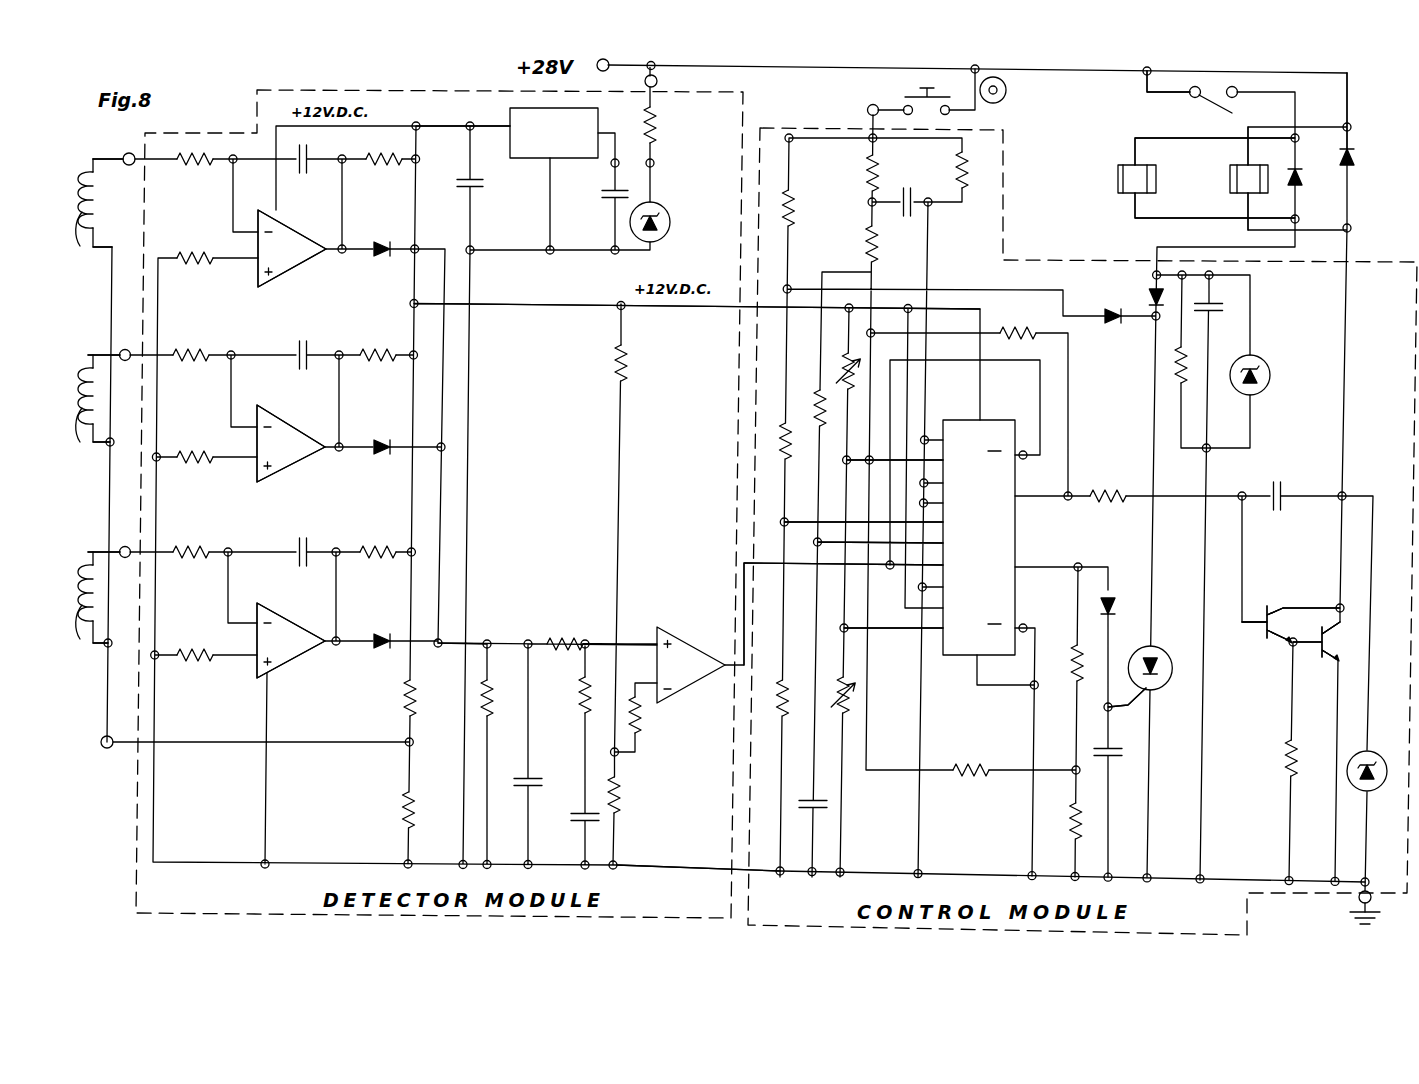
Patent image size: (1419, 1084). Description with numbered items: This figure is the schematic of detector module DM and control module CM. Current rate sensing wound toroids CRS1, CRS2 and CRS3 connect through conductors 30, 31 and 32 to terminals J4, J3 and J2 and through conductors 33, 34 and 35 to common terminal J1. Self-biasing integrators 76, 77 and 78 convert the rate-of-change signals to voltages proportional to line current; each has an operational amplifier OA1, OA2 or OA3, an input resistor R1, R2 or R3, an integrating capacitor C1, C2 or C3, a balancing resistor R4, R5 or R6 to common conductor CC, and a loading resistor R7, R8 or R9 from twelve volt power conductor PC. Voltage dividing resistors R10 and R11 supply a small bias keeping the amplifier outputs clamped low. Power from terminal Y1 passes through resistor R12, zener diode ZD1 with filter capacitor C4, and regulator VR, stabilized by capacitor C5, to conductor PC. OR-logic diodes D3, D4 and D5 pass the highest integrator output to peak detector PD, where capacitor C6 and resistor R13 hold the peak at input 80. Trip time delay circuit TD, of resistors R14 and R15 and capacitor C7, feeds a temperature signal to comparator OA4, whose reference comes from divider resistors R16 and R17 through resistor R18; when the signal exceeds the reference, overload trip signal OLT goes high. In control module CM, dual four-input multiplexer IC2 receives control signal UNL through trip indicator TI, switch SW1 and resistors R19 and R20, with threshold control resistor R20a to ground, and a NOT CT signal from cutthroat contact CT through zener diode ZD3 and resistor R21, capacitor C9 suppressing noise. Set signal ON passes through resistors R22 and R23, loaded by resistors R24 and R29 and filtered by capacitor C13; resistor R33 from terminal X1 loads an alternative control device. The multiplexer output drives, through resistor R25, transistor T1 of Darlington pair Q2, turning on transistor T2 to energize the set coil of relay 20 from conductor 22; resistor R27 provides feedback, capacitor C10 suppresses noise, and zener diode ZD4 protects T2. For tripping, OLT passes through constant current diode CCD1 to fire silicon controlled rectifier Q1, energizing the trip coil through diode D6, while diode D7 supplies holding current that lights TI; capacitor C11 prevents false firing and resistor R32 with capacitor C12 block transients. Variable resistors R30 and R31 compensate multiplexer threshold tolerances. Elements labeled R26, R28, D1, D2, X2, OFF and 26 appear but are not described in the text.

The detector module DM is at (410, 86).
The control module CM is at (1004, 184).
The conductor 30 is at (94, 145).
The conductor 31 is at (93, 342).
The conductor 32 is at (91, 538).
The conductor 33 is at (100, 248).
The conductor 34 is at (102, 444).
The conductor 35 is at (102, 644).
The common terminal J1 is at (106, 749).
The overload signal input terminal J2 is at (126, 547).
The overload signal input terminal J3 is at (126, 351).
The overload signal input terminal J4 is at (130, 153).
The current rate sensing wound toroid CRS1 is at (85, 214).
The current rate sensing wound toroid CRS2 is at (86, 412).
The current rate sensing wound toroid CRS3 is at (82, 611).
The input resistor R1 is at (209, 172).
The input resistor R2 is at (196, 361).
The input resistor R3 is at (196, 557).
The balancing resistor R4 is at (195, 250).
The balancing resistor R5 is at (193, 454).
The balancing resistor R6 is at (193, 655).
The loading resistor R7 is at (390, 154).
The loading resistor R8 is at (380, 340).
The loading resistor R9 is at (380, 537).
The voltage dividing resistor R10 is at (407, 702).
The voltage dividing resistor R11 is at (407, 803).
The resistor R12 is at (657, 125).
The resistor R13 is at (490, 711).
The resistor R14 is at (550, 631).
The resistor R15 is at (580, 697).
The voltage divider resistor R16 is at (614, 358).
The voltage divider resistor R17 is at (624, 797).
The resistor R18 is at (646, 714).
The resistor R19 is at (794, 209).
The resistor R20 is at (776, 439).
The threshold control resistor R20a is at (776, 719).
The resistor R21 is at (812, 403).
The resistor R22 is at (866, 173).
The resistor R23 is at (866, 246).
The resistor R24 is at (986, 771).
The resistor R25 is at (1112, 489).
The resistor R26 is at (1292, 767).
The resistor R27 is at (1022, 333).
The resistor R28 is at (1074, 661).
The resistor R29 is at (1070, 823).
The compensating resistor R30 is at (836, 363).
The compensating resistor R31 is at (854, 695).
The resistor R32 is at (1176, 371).
The resistor R33 is at (956, 169).
The integrating capacitor C1 is at (312, 176).
The integrating capacitor C2 is at (302, 349).
The integrating capacitor C3 is at (300, 549).
The filter capacitor C4 is at (600, 196).
The stabilizing capacitor C5 is at (485, 185).
The capacitor C6 is at (555, 769).
The capacitor C7 is at (577, 816).
The capacitor C9 is at (801, 807).
The capacitor C10 is at (1281, 493).
The capacitor C11 is at (1128, 758).
The capacitor C12 is at (1228, 317).
The capacitor C13 is at (908, 219).
The diode D1 is at (1360, 159).
The diode D2 is at (1302, 179).
The OR-logic diode D3 is at (384, 246).
The OR-logic diode D4 is at (384, 443).
The OR-logic diode D5 is at (381, 640).
The diode D6 is at (1148, 298).
The diode D7 is at (1112, 325).
The voltage limiting zener diode ZD1 is at (665, 214).
The zener diode ZD3 is at (1270, 375).
The zener diode ZD4 is at (1376, 753).
The operational amplifier OA1 is at (290, 245).
The operational amplifier OA2 is at (290, 443).
The operational amplifier OA3 is at (285, 641).
The operational amplifier OA4 is at (685, 665).
The self-biasing integrator 76 is at (343, 292).
The self-biasing integrator 77 is at (343, 489).
The self-biasing integrator 78 is at (343, 684).
The peak detector input 80 is at (486, 649).
The peak detector circuit PD is at (503, 627).
The trip time delay circuit TD is at (606, 627).
The 12 volt D.C. power conductor PC is at (466, 125).
The common conductor CC is at (742, 867).
The overload trip signal OLT is at (744, 581).
The 12 volt regulator VR is at (560, 170).
The terminal Y1 is at (658, 81).
The control switch SW1 is at (902, 95).
The control device input terminal X1 is at (868, 110).
The ground terminal X2 is at (1372, 894).
The trip indicator TI is at (1006, 91).
The dual 4-input digital multiplexer IC2 is at (1017, 527).
The set control input signal ON is at (878, 455).
The control signal UNL is at (803, 521).
The cutthroat contact CT is at (858, 563).
The off line OFF is at (912, 641).
The constant current diode CCD1 is at (1130, 569).
The silicon controlled rectifier Q1 is at (1170, 659).
The Darlington pair Q2 is at (1318, 597).
The transistor T1 is at (1262, 643).
The transistor T2 is at (1330, 663).
The relay 20 is at (1207, 172).
The conductor 22 is at (1356, 90).
The lead 26 is at (1145, 83).